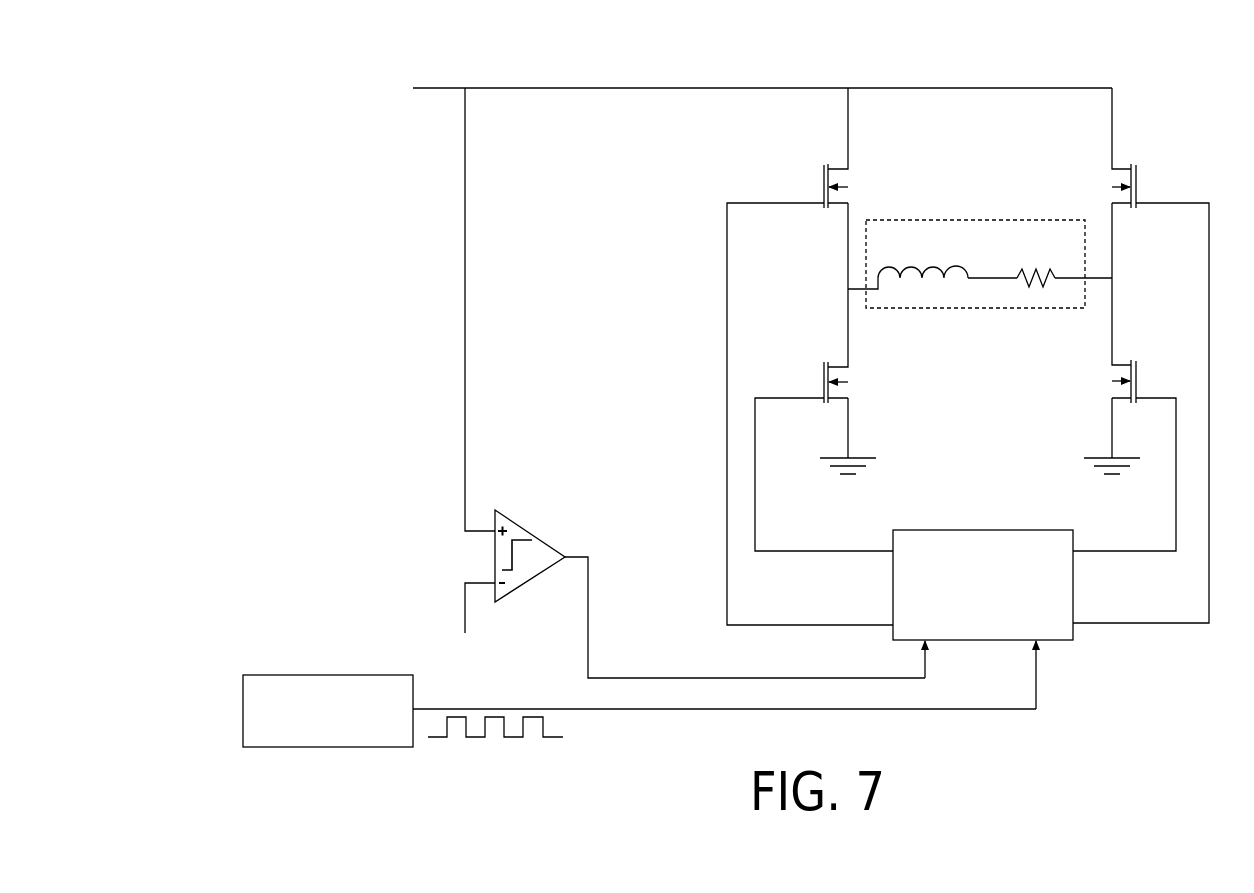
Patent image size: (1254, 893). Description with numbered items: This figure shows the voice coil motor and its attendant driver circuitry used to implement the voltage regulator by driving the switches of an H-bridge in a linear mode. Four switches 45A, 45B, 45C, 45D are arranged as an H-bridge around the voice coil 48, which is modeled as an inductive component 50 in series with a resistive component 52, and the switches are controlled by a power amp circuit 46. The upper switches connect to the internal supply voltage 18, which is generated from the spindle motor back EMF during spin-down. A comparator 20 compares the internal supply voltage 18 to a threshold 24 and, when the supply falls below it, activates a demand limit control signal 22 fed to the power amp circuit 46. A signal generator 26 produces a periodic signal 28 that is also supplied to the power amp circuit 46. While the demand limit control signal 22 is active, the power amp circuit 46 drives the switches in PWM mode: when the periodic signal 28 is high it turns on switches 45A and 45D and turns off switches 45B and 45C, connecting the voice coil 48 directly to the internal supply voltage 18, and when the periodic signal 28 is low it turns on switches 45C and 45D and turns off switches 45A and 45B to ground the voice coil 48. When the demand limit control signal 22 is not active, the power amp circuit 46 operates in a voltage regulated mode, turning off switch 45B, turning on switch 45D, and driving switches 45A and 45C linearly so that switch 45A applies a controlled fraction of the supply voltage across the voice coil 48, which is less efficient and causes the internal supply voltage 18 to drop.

The internal supply voltage 18 is at (427, 88).
The comparator 20 is at (517, 524).
The demand limit control signal 22 is at (590, 609).
The threshold 24 is at (465, 600).
The signal generator 26 is at (322, 674).
The periodic signal 28 is at (607, 711).
The switch 45A is at (821, 163).
The switch 45B is at (1140, 163).
The switch 45C is at (822, 359).
The switch 45D is at (1136, 360).
The power amp circuit 46 is at (979, 530).
The voice coil 48 is at (975, 220).
The inductive component 50 is at (927, 291).
The resistive component 52 is at (1031, 292).